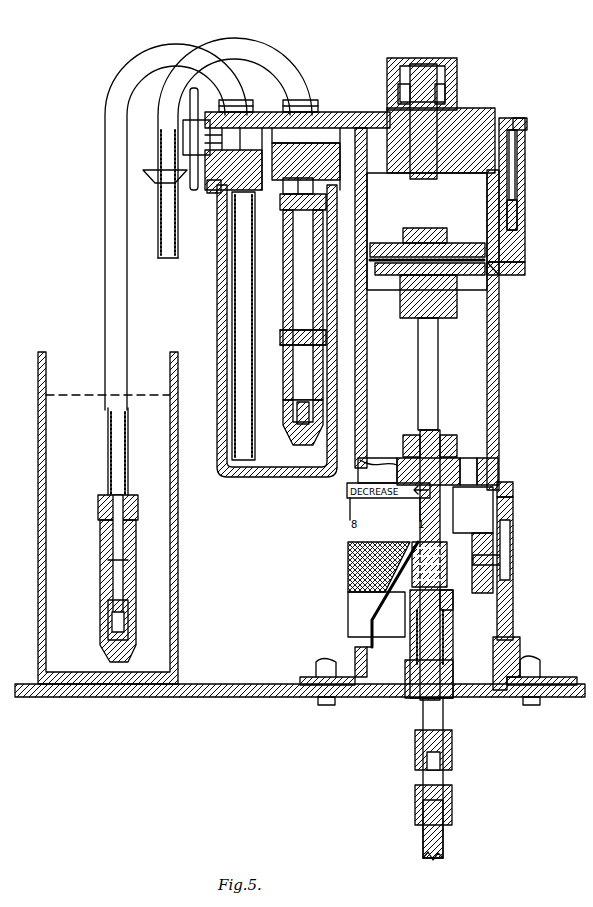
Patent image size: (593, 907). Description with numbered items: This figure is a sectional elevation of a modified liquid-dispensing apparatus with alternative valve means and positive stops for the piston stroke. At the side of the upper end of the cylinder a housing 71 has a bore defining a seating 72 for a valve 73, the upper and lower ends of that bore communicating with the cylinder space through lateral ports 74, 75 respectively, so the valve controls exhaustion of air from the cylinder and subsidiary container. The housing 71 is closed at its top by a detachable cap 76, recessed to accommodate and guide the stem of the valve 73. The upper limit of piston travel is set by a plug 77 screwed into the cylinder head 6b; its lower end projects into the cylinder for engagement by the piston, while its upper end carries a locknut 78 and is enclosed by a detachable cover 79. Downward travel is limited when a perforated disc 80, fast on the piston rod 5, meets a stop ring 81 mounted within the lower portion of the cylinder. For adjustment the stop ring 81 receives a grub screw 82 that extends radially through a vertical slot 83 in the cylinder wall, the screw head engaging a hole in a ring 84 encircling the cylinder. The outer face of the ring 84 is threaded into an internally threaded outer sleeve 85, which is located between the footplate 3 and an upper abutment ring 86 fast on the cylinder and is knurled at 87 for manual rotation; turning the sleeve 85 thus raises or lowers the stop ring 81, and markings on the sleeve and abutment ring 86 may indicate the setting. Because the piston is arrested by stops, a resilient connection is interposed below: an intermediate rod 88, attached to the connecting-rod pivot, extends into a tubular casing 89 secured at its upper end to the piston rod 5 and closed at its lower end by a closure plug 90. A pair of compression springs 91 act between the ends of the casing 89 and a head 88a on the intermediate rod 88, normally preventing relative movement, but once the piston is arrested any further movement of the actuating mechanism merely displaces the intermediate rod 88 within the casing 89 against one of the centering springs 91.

The footplate 3 is at (550, 672).
The piston rod 5 is at (424, 378).
The cylinder head 6b is at (470, 120).
The housing 71 is at (527, 245).
The seating 72 is at (518, 200).
The valve 73 is at (517, 162).
The lateral port 74 is at (500, 185).
The lateral port 75 is at (517, 268).
The detachable cap 76 is at (524, 124).
The plug 77 is at (416, 178).
The locknut 78 is at (398, 92).
The detachable cover 79 is at (420, 66).
The perforated disc 80 is at (490, 472).
The stop ring 81 is at (490, 542).
The grub screw 82 is at (470, 558).
The vertical slot 83 is at (514, 612).
The ring 84 is at (512, 562).
The outer sleeve 85 is at (522, 640).
The upper abutment ring 86 is at (514, 490).
The knurling 87 is at (350, 574).
The intermediate rod 88 is at (443, 710).
The head 88a is at (450, 600).
The tubular casing 89 is at (386, 680).
The closure plug 90 is at (412, 705).
The compression springs 91 is at (418, 580).